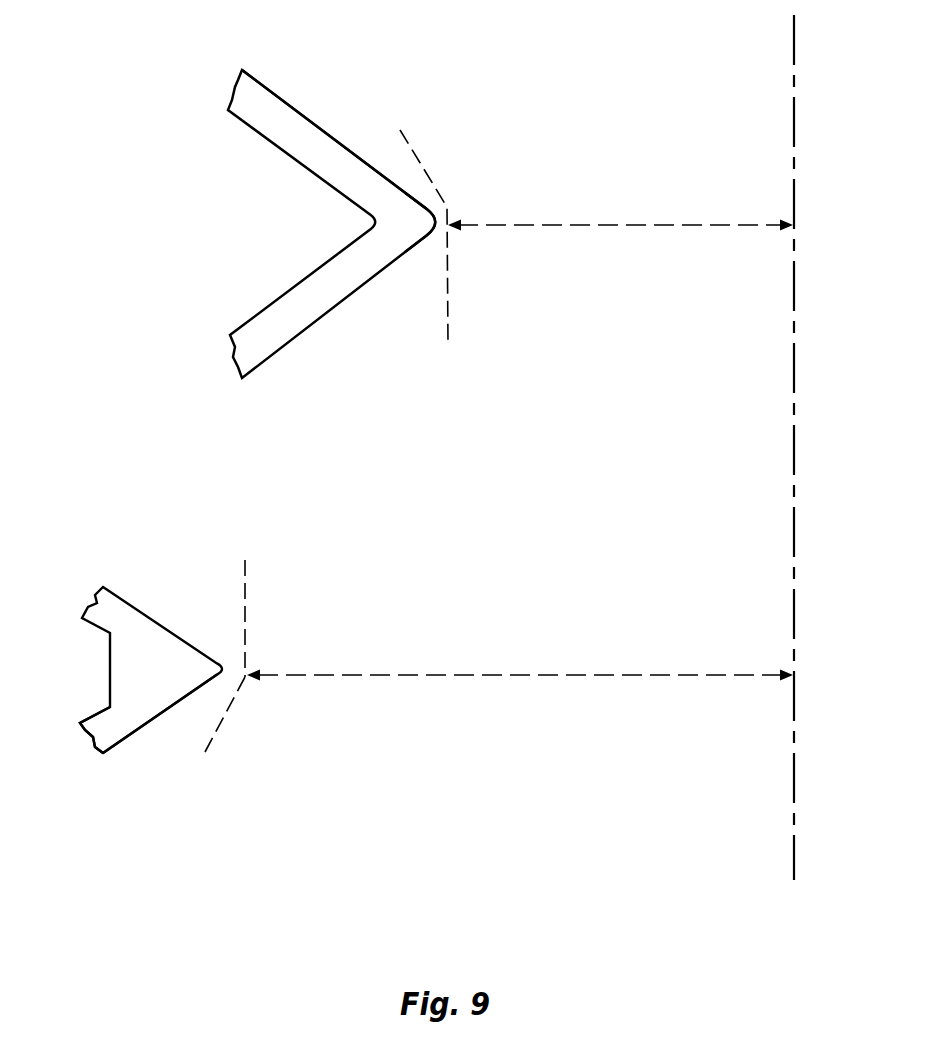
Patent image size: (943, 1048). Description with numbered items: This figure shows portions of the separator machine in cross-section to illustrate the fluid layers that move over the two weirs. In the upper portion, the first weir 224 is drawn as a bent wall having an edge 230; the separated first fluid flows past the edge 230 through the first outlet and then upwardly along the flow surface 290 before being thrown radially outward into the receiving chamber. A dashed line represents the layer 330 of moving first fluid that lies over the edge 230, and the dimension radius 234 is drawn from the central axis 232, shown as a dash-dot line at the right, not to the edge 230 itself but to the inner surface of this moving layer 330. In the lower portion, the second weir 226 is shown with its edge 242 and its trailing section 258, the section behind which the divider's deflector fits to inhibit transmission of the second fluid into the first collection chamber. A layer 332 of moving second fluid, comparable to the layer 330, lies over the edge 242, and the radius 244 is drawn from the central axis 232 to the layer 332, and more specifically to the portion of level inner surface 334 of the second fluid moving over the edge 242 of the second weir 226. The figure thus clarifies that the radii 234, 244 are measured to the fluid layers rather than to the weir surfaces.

The first weir 224 is at (285, 293).
The flow surface 290 is at (312, 120).
The edge 230 is at (399, 217).
The layer 330 is at (433, 198).
The radius 234 is at (623, 225).
The central axis 232 is at (793, 112).
The second weir 226 is at (107, 607).
The trailing section 258 is at (88, 715).
The edge 242 is at (182, 675).
The layer 332 is at (210, 652).
The level inner surface 334 is at (222, 715).
The radius 244 is at (530, 675).